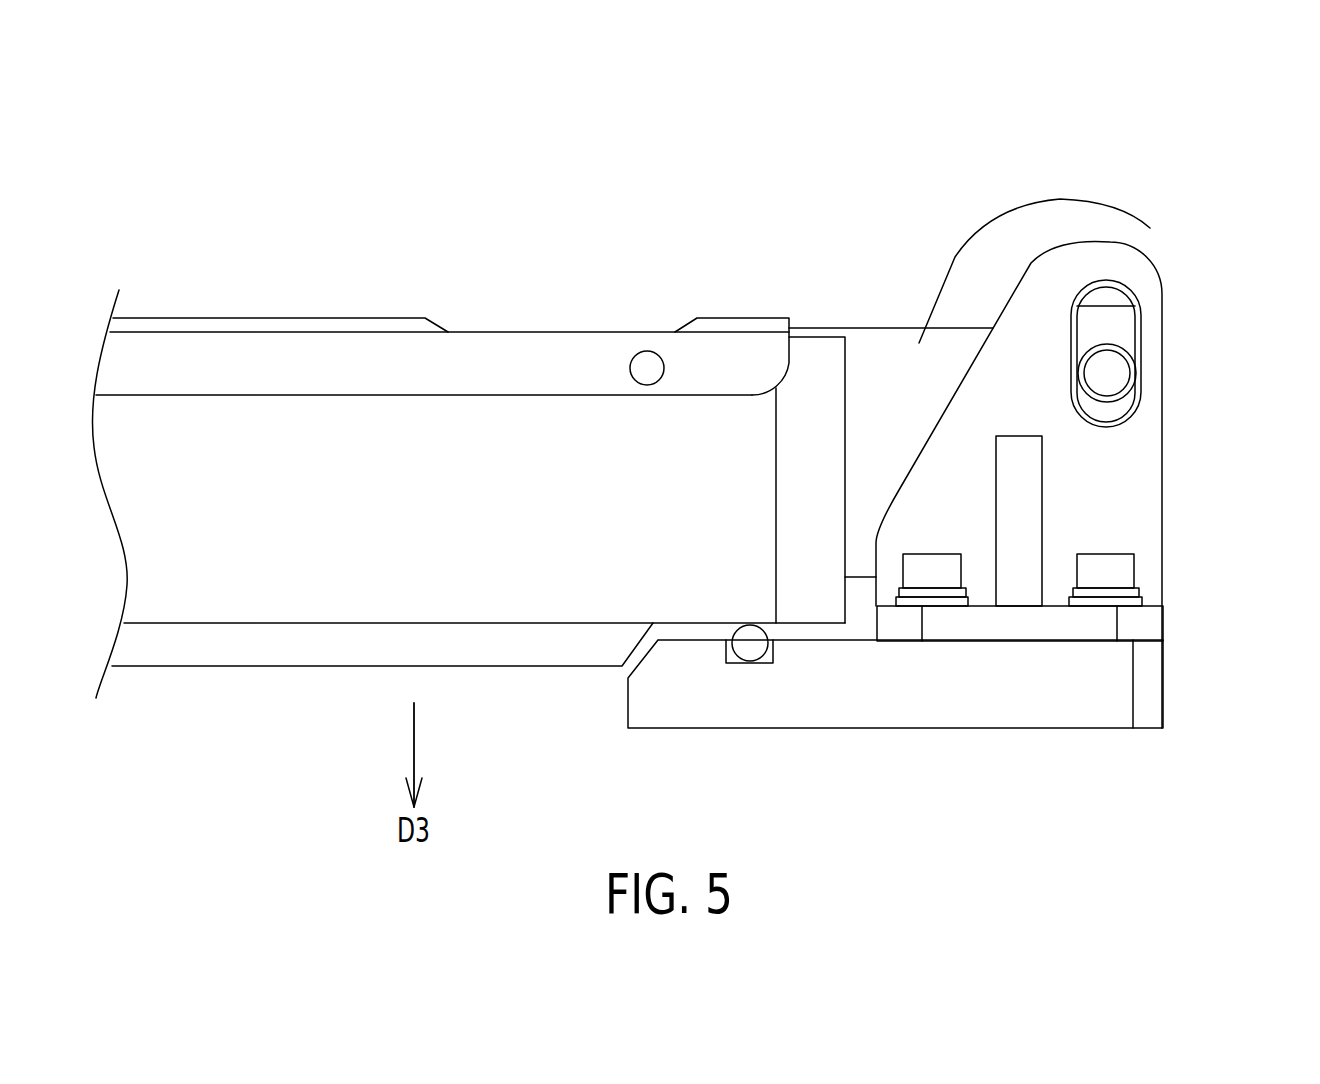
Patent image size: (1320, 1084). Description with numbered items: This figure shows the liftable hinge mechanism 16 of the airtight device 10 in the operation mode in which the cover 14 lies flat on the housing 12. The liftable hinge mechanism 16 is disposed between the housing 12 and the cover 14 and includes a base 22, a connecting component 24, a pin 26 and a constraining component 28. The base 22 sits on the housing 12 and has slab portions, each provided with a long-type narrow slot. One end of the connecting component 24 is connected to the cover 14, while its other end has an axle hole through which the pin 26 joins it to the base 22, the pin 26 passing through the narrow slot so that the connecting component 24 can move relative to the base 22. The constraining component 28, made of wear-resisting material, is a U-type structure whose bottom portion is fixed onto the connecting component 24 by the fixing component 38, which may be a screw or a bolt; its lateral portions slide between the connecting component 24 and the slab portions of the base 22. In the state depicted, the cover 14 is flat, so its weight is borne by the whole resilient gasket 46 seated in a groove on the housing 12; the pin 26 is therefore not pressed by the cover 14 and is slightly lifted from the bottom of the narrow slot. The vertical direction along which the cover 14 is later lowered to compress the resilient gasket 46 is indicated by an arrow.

The airtight device 10 is at (696, 152).
The housing 12 is at (1095, 688).
The cover 14 is at (372, 435).
The liftable hinge mechanism 16 is at (1242, 227).
The base 22 is at (1128, 476).
The connecting component 24 is at (1150, 228).
The pin 26 is at (1118, 375).
The constraining component 28 is at (1118, 328).
The fixing component 38 is at (1118, 297).
The resilient gasket 46 is at (750, 650).